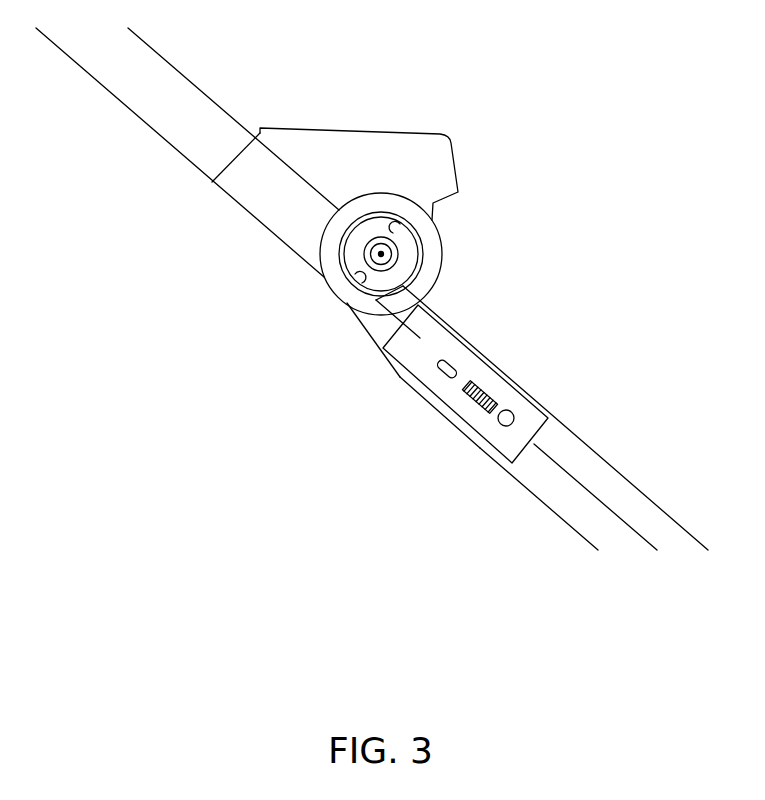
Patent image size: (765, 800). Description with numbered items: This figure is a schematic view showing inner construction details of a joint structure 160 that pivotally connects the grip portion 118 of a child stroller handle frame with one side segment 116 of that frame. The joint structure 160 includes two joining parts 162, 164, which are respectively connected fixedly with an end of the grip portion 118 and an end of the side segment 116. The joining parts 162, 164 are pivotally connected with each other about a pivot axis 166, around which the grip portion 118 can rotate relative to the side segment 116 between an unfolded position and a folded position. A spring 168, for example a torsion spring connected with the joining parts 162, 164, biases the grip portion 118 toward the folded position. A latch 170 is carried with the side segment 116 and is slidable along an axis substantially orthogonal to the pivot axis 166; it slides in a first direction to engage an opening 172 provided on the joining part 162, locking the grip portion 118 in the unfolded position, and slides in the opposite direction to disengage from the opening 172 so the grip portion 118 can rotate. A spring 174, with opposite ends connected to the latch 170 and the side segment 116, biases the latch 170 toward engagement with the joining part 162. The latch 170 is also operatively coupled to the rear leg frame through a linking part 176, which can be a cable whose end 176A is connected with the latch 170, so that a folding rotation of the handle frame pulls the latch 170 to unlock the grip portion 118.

The side segment 116 is at (563, 425).
The grip portion 118 is at (173, 66).
The joint structure 160 is at (315, 305).
The joining part 162 is at (292, 250).
The joining part 164 is at (375, 355).
The pivot axis 166 is at (381, 254).
The spring 168 is at (420, 237).
The latch 170 is at (445, 320).
The opening 172 is at (367, 307).
The spring 174 is at (490, 387).
The linking part 176 is at (590, 497).
The end 176A is at (527, 488).